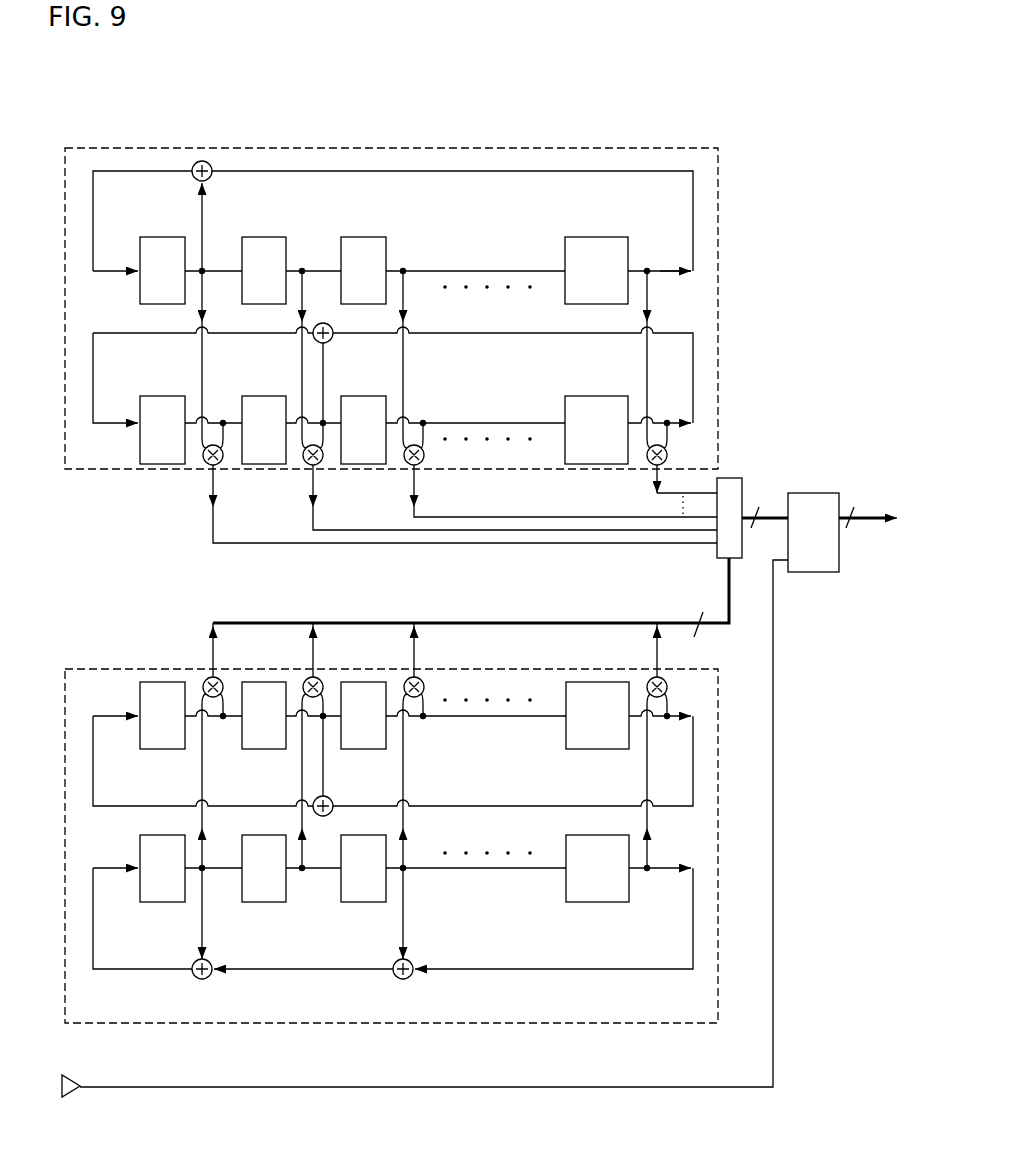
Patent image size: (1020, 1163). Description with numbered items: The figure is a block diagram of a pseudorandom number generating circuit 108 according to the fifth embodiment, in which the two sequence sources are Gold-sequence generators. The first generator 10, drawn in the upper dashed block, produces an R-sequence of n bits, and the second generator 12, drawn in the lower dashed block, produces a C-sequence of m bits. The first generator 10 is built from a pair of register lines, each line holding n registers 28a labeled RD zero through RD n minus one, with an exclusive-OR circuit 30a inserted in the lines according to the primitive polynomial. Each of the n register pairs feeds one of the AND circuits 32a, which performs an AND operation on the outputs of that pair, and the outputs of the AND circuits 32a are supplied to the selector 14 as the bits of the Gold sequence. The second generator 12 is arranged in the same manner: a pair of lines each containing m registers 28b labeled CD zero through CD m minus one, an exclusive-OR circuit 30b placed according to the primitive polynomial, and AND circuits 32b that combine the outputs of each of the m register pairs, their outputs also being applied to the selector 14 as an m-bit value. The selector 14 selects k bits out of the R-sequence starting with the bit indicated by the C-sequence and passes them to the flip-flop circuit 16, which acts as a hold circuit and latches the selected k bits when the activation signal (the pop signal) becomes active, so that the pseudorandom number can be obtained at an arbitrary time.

The pseudorandom number generating circuit 108 is at (759, 126).
The first generator 10 is at (718, 306).
The second generator 12 is at (718, 820).
The selector 14 is at (738, 478).
The flip-flop circuit 16 is at (836, 493).
The registers 28a is at (387, 333).
The registers 28b is at (387, 811).
The exclusive-OR circuit 30a is at (204, 160).
The exclusive-OR circuit 30b is at (333, 810).
The AND circuits 32a is at (435, 473).
The AND circuits 32b is at (435, 668).